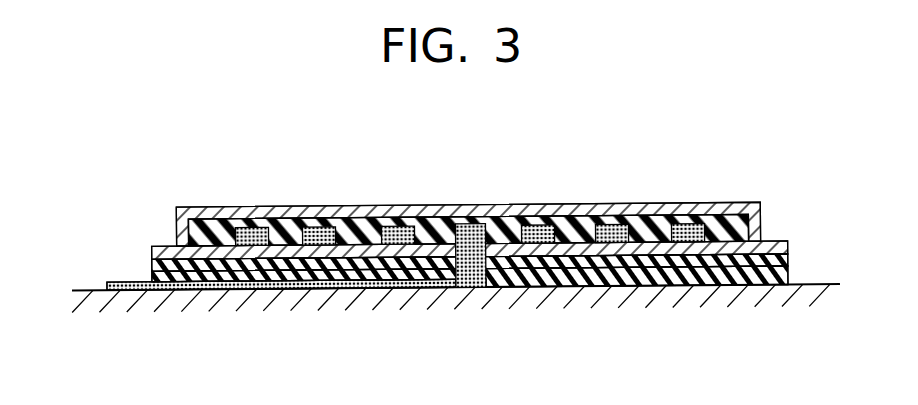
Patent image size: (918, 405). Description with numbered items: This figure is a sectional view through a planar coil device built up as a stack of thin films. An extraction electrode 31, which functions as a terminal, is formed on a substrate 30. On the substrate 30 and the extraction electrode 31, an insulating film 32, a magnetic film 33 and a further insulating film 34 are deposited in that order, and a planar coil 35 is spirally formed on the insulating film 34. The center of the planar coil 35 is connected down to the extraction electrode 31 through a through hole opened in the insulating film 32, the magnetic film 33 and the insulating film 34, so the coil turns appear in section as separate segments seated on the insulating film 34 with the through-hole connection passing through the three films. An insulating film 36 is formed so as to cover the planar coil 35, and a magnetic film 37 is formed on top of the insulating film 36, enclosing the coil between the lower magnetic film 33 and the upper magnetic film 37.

The substrate 30 is at (808, 288).
The extraction electrode 31 is at (116, 284).
The insulating film 32 is at (255, 275).
The magnetic film 33 is at (325, 262).
The insulating film 34 is at (395, 253).
The planar coil 35 is at (322, 228).
The insulating film 36 is at (424, 234).
The magnetic film 37 is at (519, 208).